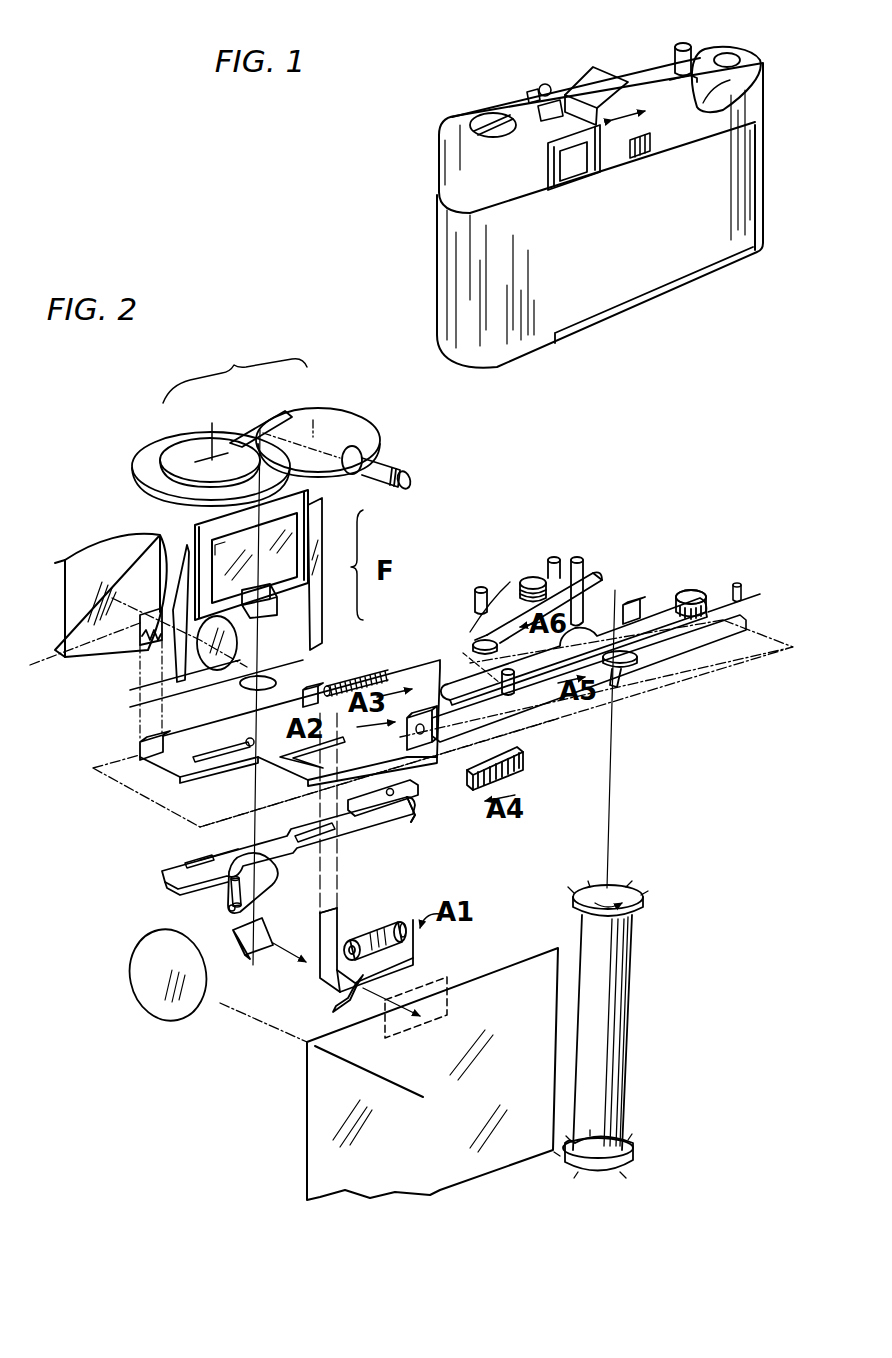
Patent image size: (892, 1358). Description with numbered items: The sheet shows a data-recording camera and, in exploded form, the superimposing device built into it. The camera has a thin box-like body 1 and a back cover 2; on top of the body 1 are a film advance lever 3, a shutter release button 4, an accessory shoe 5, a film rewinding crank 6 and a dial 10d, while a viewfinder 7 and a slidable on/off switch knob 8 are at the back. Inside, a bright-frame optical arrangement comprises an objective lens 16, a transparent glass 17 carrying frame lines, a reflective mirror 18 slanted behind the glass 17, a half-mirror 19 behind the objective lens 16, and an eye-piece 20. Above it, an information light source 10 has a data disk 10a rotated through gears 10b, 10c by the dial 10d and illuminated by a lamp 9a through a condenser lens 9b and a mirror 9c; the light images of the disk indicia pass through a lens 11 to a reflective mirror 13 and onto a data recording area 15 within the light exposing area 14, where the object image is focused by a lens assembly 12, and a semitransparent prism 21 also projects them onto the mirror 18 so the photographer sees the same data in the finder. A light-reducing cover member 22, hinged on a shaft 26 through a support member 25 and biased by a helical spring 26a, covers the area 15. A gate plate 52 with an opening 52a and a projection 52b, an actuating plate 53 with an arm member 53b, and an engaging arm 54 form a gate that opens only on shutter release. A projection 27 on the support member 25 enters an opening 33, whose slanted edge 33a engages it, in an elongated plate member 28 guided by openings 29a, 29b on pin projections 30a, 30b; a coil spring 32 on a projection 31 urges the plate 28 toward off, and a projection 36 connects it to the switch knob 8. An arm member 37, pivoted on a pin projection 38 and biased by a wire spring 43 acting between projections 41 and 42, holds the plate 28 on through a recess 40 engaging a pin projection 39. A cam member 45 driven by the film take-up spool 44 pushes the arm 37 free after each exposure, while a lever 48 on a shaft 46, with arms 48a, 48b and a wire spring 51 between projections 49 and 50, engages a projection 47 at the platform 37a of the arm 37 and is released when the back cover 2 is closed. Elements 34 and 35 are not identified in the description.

In FIG. 1, the body 1 is at (730, 120).
In FIG. 1, the back cover 2 is at (556, 338).
In FIG. 1, the film advance lever 3 is at (742, 60).
In FIG. 1, the shutter release button 4 is at (674, 52).
In FIG. 1, the accessory shoe 5 is at (592, 78).
In FIG. 1, the film rewinding crank 6 is at (482, 116).
In FIG. 1, the viewfinder 7 is at (578, 168).
In FIG. 1, the switch knob 8 is at (640, 160).
In FIG. 2, the switch knob 8 is at (520, 760).
In FIG. 2, the lamp 9a is at (398, 470).
In FIG. 2, the condenser lens 9b is at (360, 448).
In FIG. 2, the reflective mirror 9c is at (243, 432).
In FIG. 2, the information light source 10 is at (249, 423).
In FIG. 2, the data disk 10a is at (138, 458).
In FIG. 2, the gear 10b is at (180, 446).
In FIG. 2, the gear 10c is at (305, 412).
In FIG. 1, the dial 10d is at (541, 86).
In FIG. 2, the lens 11 is at (250, 690).
In FIG. 2, the lens assembly 12 is at (180, 1015).
In FIG. 2, the reflective mirror 13 is at (250, 955).
In FIG. 2, the light exposing area 14 is at (315, 1148).
In FIG. 2, the data recording area 15 is at (432, 1005).
In FIG. 2, the objective lens 16 is at (80, 580).
In FIG. 2, the transparent glass 17 is at (290, 520).
In FIG. 2, the reflective mirror 18 is at (318, 552).
In FIG. 2, the half-mirror 19 is at (180, 555).
In FIG. 2, the eye-piece 20 is at (210, 668).
In FIG. 2, the semitransparent prism 21 is at (260, 612).
In FIG. 2, the cover member 22 is at (340, 1008).
In FIG. 2, the support member 25 is at (372, 947).
In FIG. 2, the shaft 26 is at (385, 911).
In FIG. 2, the helical spring 26a is at (400, 925).
In FIG. 2, the projection 27 is at (320, 925).
In FIG. 2, the elongated plate member 28 is at (406, 735).
In FIG. 2, the elongated guiding opening 29a is at (95, 770).
In FIG. 2, the elongated guiding opening 29b is at (432, 690).
In FIG. 2, the pin projection 30a is at (248, 748).
In FIG. 2, the pin projection 30b is at (507, 694).
In FIG. 2, the projection 31 is at (304, 690).
In FIG. 2, the coil spring 32 is at (353, 680).
In FIG. 2, the opening 33 is at (253, 736).
In FIG. 2, the edge 33a is at (290, 745).
In FIG. 2, the tab 34 is at (138, 742).
In FIG. 2, the spring post 35 is at (135, 640).
In FIG. 2, the projection 36 is at (412, 792).
In FIG. 2, the arm member 37 is at (585, 618).
In FIG. 2, the projection platform 37a is at (632, 603).
In FIG. 2, the pin projection 38 is at (703, 591).
In FIG. 2, the pin projection 39 is at (543, 705).
In FIG. 2, the recess 40 is at (472, 646).
In FIG. 2, the projection 41 is at (690, 591).
In FIG. 2, the projection 42 is at (745, 588).
In FIG. 2, the wire spring 43 is at (735, 600).
In FIG. 2, the film take up spool 44 is at (613, 1036).
In FIG. 2, the cam member 45 is at (640, 670).
In FIG. 2, the shaft 46 is at (533, 577).
In FIG. 2, the projection 47 is at (580, 558).
In FIG. 2, the lever 48 is at (538, 579).
In FIG. 2, the arm 48a is at (598, 575).
In FIG. 2, the arm 48b is at (475, 640).
In FIG. 2, the projection 49 is at (555, 558).
In FIG. 2, the projection 50 is at (474, 594).
In FIG. 2, the wire spring 51 is at (487, 602).
In FIG. 2, the gate plate 52 is at (195, 902).
In FIG. 2, the opening 52a is at (226, 906).
In FIG. 2, the projection 52b is at (230, 895).
In FIG. 2, the actuating plate 53 is at (259, 846).
In FIG. 2, the arm member 53b is at (195, 866).
In FIG. 2, the engaging arm 54 is at (418, 820).